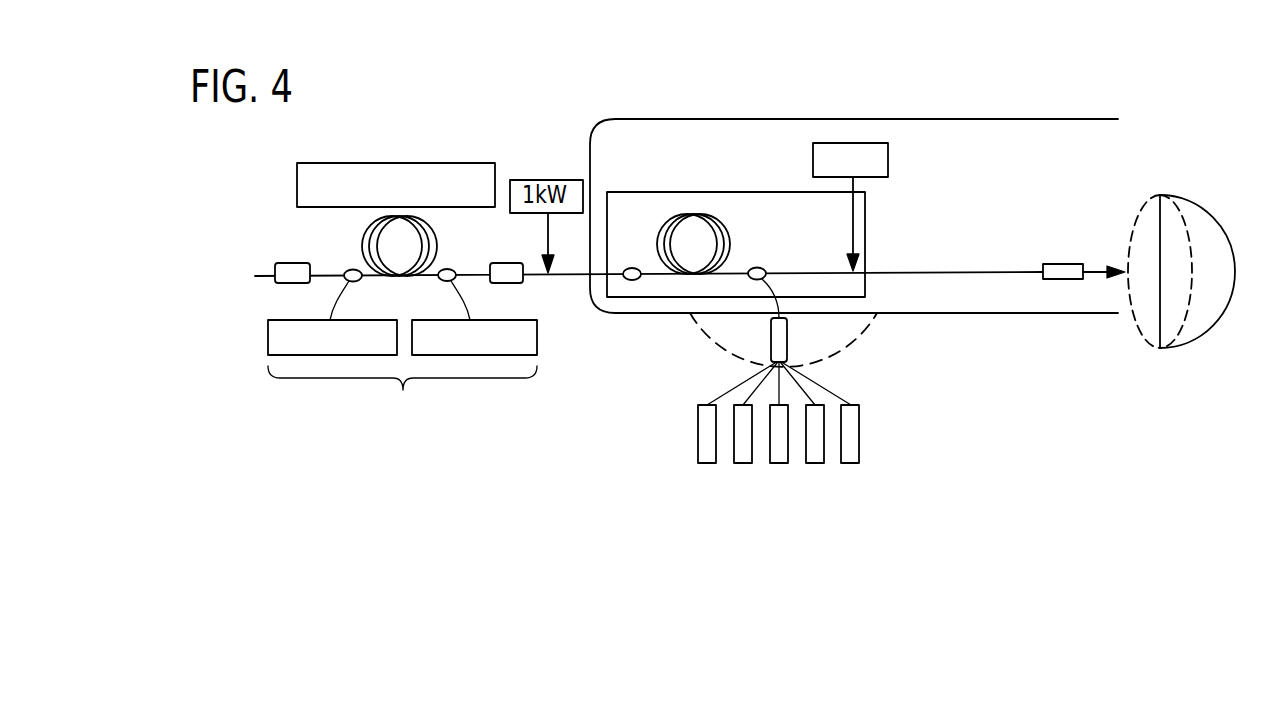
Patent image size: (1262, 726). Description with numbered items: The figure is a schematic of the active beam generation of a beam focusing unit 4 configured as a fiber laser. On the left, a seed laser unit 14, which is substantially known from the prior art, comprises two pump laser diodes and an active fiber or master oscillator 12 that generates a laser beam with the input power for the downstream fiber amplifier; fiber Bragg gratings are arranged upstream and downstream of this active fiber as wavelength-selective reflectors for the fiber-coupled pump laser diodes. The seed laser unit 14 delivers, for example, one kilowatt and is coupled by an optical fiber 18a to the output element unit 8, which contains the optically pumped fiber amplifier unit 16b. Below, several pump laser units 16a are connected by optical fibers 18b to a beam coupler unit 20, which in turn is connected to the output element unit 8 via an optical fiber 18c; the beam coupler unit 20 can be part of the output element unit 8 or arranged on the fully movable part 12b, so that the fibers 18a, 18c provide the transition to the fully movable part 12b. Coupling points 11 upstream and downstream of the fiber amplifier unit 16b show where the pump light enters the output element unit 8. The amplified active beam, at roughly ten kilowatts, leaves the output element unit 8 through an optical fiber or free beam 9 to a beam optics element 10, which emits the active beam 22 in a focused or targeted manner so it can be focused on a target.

The beam focusing unit 4 is at (522, 121).
The output element unit 8 is at (778, 261).
The optical fiber or optical free beam 9 is at (975, 271).
The beam optics element 10 is at (1062, 264).
The coupling points 11 is at (632, 268).
The master oscillator 12 is at (394, 306).
The fully movable part 12b is at (1088, 119).
The seed laser unit 14 is at (402, 352).
The pump laser units 16a is at (707, 413).
The fiber amplifier unit 16b is at (706, 276).
The optical fiber 18a is at (572, 278).
The optical fibers 18b is at (730, 387).
The optical fiber 18c is at (752, 279).
The beam coupler unit 20 is at (777, 340).
The active beam 22 is at (1097, 264).